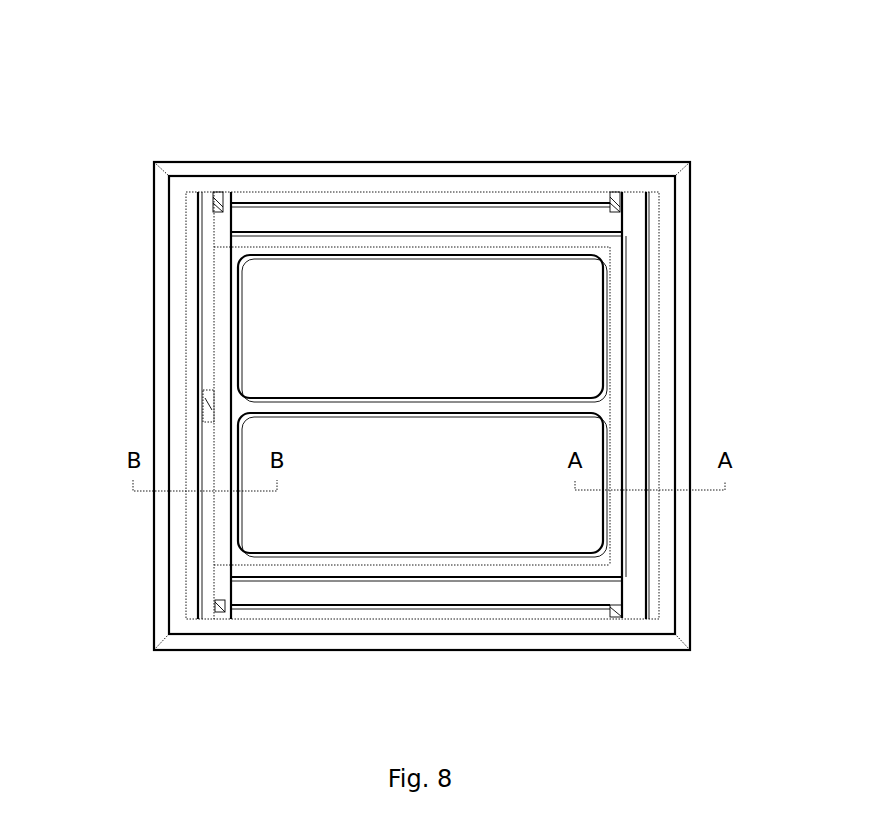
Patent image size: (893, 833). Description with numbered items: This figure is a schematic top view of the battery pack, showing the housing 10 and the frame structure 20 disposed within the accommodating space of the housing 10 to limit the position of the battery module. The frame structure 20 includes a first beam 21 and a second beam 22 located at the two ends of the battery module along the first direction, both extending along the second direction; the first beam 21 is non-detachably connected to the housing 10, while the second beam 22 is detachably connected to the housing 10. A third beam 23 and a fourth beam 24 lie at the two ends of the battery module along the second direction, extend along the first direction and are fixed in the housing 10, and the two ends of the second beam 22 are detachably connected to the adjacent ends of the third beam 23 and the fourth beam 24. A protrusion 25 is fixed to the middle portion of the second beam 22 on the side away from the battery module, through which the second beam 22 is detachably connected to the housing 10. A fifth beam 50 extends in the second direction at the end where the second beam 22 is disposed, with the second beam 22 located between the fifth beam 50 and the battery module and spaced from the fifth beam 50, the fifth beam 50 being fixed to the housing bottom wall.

The housing 10 is at (238, 161).
The frame structure 20 is at (406, 212).
The first beam 21 is at (633, 420).
The second beam 22 is at (225, 553).
The third beam 23 is at (478, 590).
The fourth beam 24 is at (535, 222).
The protrusion 25 is at (205, 413).
The fifth beam 50 is at (208, 290).